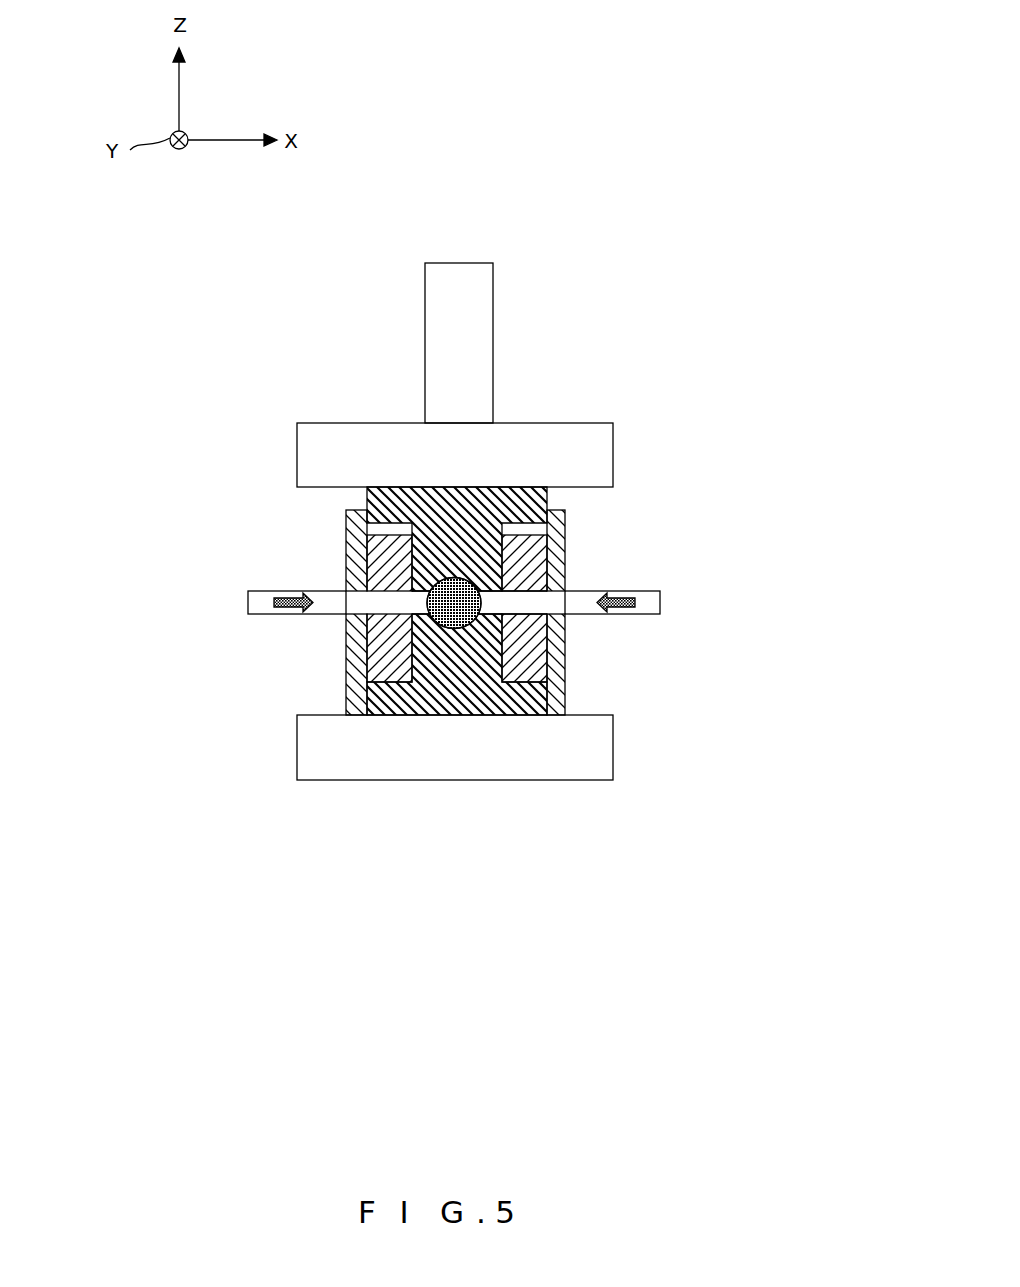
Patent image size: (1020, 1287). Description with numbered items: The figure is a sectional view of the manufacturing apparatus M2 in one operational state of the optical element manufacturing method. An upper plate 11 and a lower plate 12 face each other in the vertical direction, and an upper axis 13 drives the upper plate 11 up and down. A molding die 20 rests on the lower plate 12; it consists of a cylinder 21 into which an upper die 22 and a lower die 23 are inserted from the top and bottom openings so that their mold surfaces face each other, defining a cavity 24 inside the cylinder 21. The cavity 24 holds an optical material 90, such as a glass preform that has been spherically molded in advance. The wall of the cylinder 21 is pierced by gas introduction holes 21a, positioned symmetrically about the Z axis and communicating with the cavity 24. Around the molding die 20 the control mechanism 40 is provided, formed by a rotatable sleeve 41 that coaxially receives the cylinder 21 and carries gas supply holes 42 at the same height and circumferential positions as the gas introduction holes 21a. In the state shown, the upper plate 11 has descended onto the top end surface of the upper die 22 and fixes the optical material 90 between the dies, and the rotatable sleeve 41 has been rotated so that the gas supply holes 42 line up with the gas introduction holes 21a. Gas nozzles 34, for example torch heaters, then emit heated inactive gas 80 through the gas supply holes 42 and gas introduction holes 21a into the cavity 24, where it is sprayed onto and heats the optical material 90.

The manufacturing apparatus M2 is at (690, 146).
The upper plate 11 is at (320, 438).
The lower plate 12 is at (358, 762).
The upper axis 13 is at (481, 283).
The molding die 20 is at (370, 669).
The cylinder 21 is at (387, 545).
The gas introduction holes 21a is at (525, 603).
The upper die 22 is at (417, 512).
The lower die 23 is at (432, 700).
The cavity 24 is at (487, 603).
The gas nozzles 34 is at (263, 601).
The control mechanism 40 is at (554, 581).
The rotatable sleeve 41 is at (557, 522).
The gas supply holes 42 is at (557, 601).
The inactive gas 80 is at (292, 607).
The optical material 90 is at (457, 603).